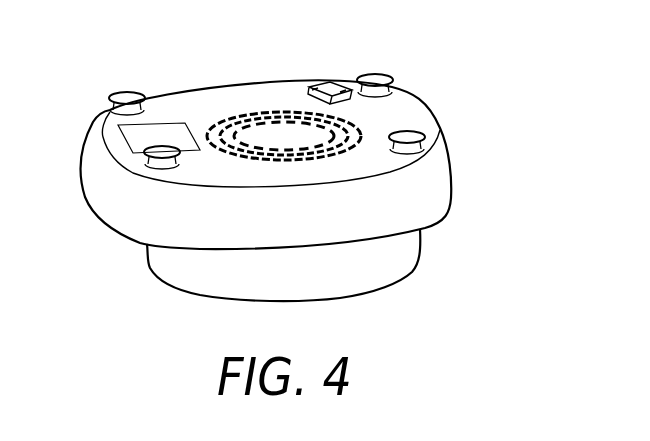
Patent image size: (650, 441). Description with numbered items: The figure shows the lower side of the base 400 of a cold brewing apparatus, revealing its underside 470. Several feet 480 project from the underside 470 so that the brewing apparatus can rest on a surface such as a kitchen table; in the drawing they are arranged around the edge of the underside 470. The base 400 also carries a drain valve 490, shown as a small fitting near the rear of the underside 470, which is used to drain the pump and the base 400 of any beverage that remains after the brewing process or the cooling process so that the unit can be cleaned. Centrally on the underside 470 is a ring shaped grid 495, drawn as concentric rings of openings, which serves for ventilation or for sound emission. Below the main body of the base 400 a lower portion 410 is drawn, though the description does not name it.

The base 400 is at (441, 190).
The base 410 is at (408, 257).
The underside 470 is at (193, 103).
The feet 480 is at (127, 99).
The drain valve 490 is at (317, 88).
The ring shaped grid 495 is at (260, 113).